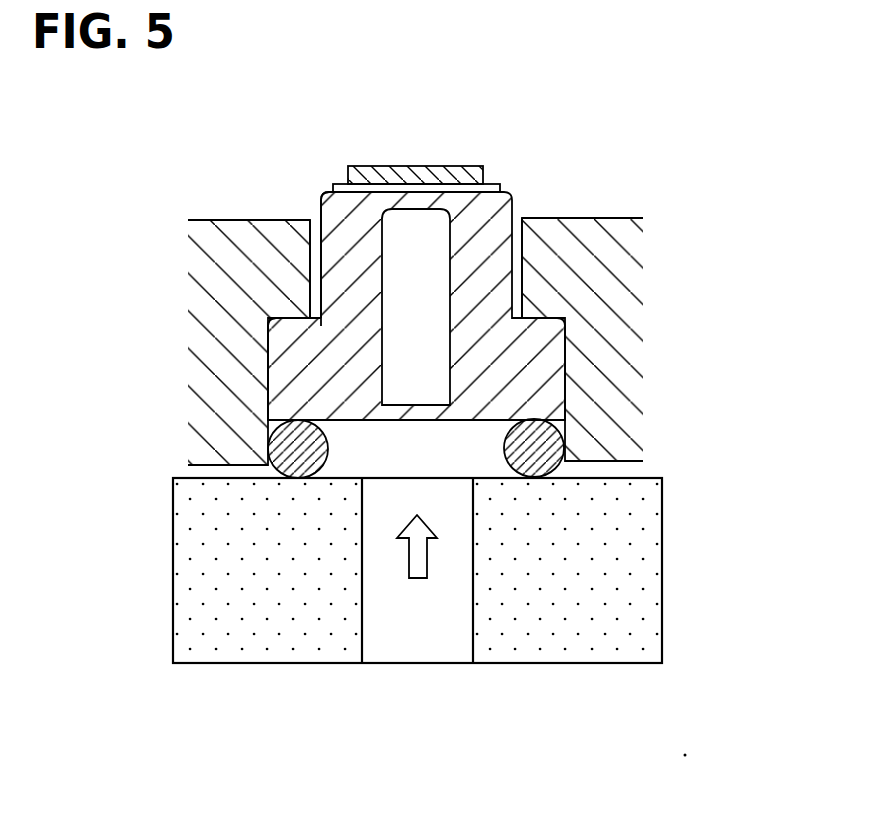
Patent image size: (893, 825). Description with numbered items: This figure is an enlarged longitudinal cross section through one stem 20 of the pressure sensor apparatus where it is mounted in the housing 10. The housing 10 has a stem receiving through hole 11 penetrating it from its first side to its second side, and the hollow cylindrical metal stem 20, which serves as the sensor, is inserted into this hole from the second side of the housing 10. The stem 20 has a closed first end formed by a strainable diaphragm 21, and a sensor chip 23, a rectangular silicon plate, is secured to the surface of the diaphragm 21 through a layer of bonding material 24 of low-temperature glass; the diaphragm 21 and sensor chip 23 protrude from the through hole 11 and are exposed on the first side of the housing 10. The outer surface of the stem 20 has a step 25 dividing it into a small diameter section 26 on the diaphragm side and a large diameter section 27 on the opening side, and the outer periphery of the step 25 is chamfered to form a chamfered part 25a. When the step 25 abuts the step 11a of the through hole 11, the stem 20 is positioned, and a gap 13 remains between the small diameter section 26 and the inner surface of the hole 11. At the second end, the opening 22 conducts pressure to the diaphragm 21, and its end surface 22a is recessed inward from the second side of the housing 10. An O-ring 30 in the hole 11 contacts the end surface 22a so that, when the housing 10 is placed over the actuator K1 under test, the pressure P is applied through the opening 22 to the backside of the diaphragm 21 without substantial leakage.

The housing 10 is at (202, 237).
The stem receiving through hole 11 is at (309, 224).
The step of the stem receiving through hole 11a is at (284, 318).
The gap 13 is at (515, 233).
The stem 20 is at (422, 320).
The diaphragm 21 is at (423, 203).
The opening 22 is at (451, 419).
The end surface 22a is at (343, 421).
The sensor chip 23 is at (401, 176).
The bonding material 24 is at (343, 184).
The step 25 is at (535, 316).
The chamfered part 25a is at (552, 304).
The small diameter section 26 is at (336, 253).
The large diameter section 27 is at (284, 370).
The O-ring 30 is at (548, 458).
The actuator K1 is at (640, 565).
The pressure P is at (417, 567).